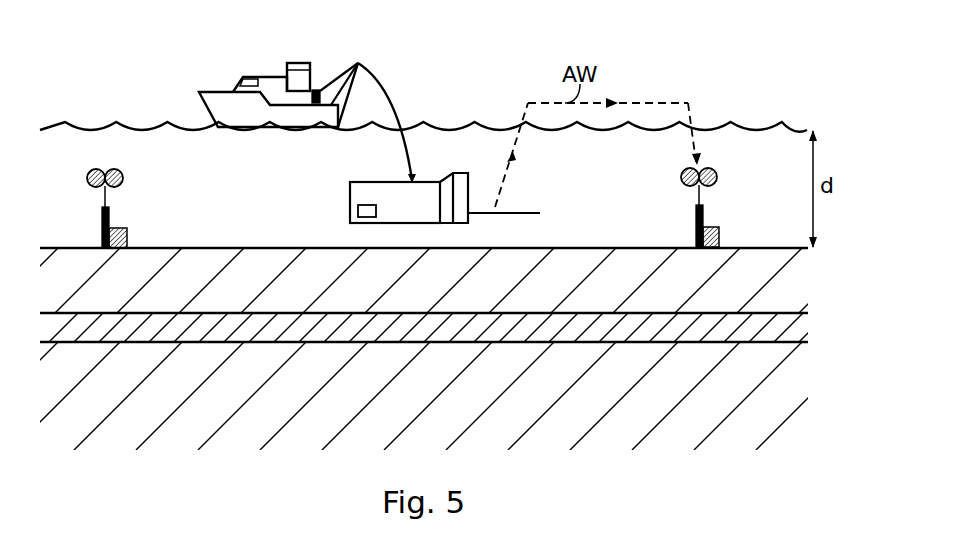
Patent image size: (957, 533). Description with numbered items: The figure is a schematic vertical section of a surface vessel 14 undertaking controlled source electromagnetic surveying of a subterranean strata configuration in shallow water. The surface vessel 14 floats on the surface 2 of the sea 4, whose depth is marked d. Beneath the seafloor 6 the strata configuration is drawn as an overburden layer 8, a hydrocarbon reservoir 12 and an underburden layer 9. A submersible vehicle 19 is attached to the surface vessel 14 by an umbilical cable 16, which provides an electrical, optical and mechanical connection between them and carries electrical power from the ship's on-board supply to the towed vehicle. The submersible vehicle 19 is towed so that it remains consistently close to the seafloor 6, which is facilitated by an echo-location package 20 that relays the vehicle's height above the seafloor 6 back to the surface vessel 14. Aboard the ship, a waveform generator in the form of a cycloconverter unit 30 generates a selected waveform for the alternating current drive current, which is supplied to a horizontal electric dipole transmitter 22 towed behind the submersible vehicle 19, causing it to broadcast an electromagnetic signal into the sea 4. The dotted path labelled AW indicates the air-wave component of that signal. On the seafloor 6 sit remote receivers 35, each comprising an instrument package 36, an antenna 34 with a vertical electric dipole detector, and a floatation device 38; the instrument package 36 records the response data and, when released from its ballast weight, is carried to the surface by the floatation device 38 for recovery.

The surface 2 is at (476, 122).
The sea 4 is at (226, 187).
The seafloor 6 is at (225, 248).
The overburden layer 8 is at (757, 289).
The underburden layer 9 is at (762, 371).
The hydrocarbon reservoir 12 is at (790, 327).
The surface vessel 14 is at (298, 62).
The umbilical cable 16 is at (398, 110).
The submersible vehicle 19 is at (350, 193).
The echo-location package 20 is at (352, 212).
The horizontal electric dipole (HED) transmitter 22 is at (531, 214).
The cycloconverter unit 30 is at (318, 90).
The antenna 34 is at (102, 212).
The remote receiver 35 is at (403, 198).
The instrument package 36 is at (127, 238).
The floatation device 38 is at (123, 178).